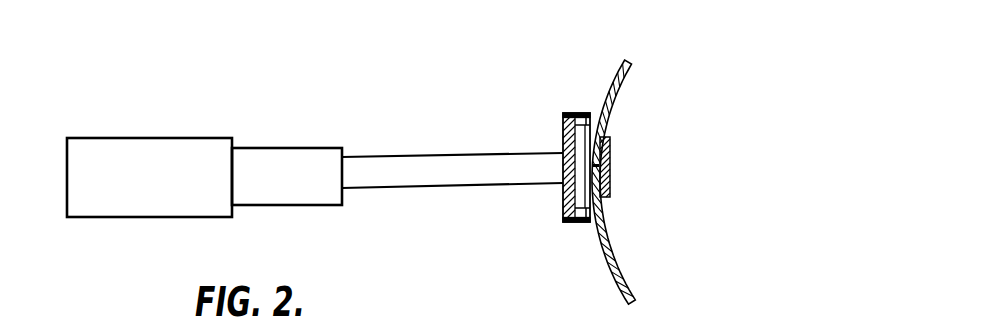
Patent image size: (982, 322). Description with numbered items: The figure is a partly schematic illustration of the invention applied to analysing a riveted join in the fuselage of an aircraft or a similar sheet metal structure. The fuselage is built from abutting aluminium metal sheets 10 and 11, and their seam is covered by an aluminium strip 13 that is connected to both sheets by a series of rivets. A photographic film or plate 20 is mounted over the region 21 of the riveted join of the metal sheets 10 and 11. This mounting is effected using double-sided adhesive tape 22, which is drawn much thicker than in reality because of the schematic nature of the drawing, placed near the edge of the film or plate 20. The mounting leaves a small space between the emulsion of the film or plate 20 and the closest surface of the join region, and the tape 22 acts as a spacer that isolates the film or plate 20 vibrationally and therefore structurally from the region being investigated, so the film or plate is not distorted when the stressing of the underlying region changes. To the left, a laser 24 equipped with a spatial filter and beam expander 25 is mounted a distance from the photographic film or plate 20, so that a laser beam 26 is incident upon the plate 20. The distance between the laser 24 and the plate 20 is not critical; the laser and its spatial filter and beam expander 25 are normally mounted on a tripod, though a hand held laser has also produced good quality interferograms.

The metal sheet 10 is at (617, 78).
The metal sheet 11 is at (612, 253).
The aluminium strip 13 is at (610, 175).
The photographic film or plate 20 is at (563, 123).
The region of a riveted join 21 is at (606, 164).
The double-sided adhesive tape 22 is at (588, 113).
The laser 24 is at (175, 145).
The spatial filter and beam expander 25 is at (288, 163).
The laser beam 26 is at (430, 170).